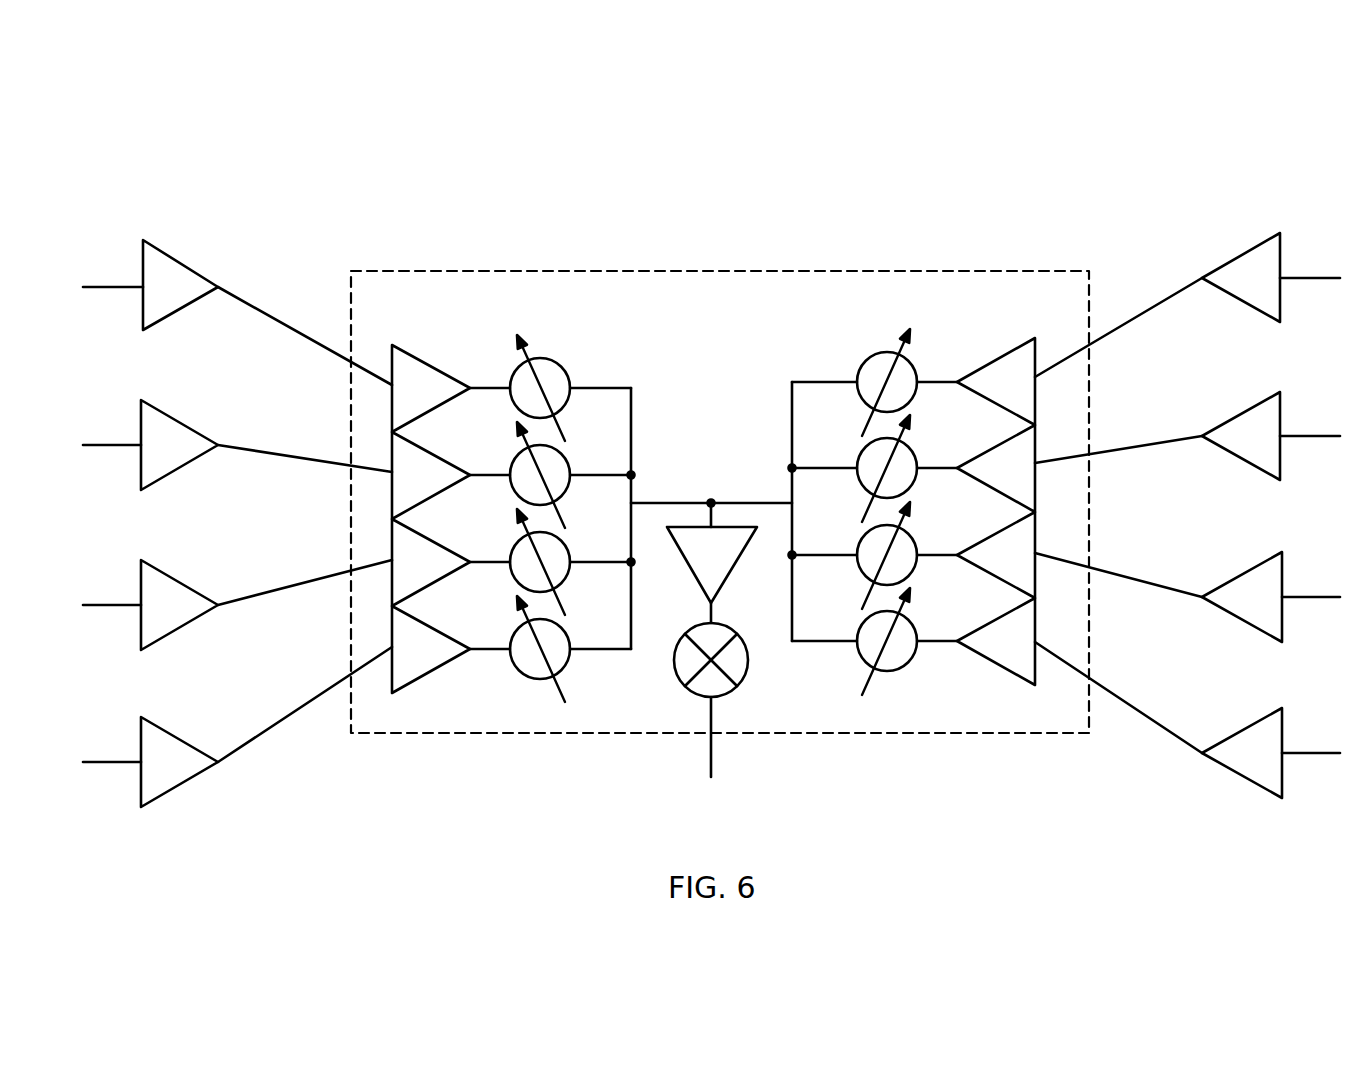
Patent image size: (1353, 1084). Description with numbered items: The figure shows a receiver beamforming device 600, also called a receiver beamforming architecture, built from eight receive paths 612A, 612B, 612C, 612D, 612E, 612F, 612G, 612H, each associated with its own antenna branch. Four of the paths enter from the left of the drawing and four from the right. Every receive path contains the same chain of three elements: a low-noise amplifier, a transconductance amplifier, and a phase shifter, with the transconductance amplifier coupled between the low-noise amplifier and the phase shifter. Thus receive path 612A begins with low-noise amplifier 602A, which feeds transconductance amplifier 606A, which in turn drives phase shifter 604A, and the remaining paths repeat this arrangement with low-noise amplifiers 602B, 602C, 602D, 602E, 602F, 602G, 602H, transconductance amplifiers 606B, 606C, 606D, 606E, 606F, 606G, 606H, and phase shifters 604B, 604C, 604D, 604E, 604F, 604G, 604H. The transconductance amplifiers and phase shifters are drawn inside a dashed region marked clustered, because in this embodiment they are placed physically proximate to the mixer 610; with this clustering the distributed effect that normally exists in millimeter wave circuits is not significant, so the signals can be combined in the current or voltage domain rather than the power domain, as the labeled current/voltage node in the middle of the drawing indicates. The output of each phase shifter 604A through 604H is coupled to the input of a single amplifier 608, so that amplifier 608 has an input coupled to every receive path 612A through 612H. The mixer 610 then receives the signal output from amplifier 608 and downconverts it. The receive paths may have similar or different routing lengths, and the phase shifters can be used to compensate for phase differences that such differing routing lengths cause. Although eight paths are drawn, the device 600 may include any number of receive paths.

The device 600 is at (847, 160).
The low-noise amplifier 602A is at (181, 262).
The low-noise amplifier 602B is at (180, 422).
The low-noise amplifier 602C is at (180, 582).
The low-noise amplifier 602D is at (180, 739).
The low-noise amplifier 602E is at (1244, 254).
The low-noise amplifier 602F is at (1244, 413).
The low-noise amplifier 602G is at (1244, 574).
The low-noise amplifier 602H is at (1244, 730).
The phase shifter 604A is at (566, 367).
The phase shifter 604B is at (561, 451).
The phase shifter 604C is at (561, 538).
The phase shifter 604D is at (561, 627).
The phase shifter 604E is at (864, 363).
The phase shifter 604F is at (864, 450).
The phase shifter 604G is at (864, 535).
The phase shifter 604H is at (866, 622).
The transconductance amplifier 606A is at (428, 413).
The transconductance amplifier 606B is at (428, 500).
The transconductance amplifier 606C is at (428, 586).
The transconductance amplifier 606D is at (428, 673).
The transconductance amplifier 606E is at (1000, 406).
The transconductance amplifier 606F is at (1000, 493).
The transconductance amplifier 606G is at (1000, 579).
The transconductance amplifier 606H is at (1000, 666).
The amplifier 608 is at (728, 576).
The mixer 610 is at (737, 686).
The receive path 612A is at (326, 296).
The receive path 612B is at (313, 418).
The receive path 612C is at (307, 552).
The receive path 612D is at (300, 672).
The receive path 612E is at (1108, 289).
The receive path 612F is at (1118, 414).
The receive path 612G is at (1122, 548).
The receive path 612H is at (1135, 674).